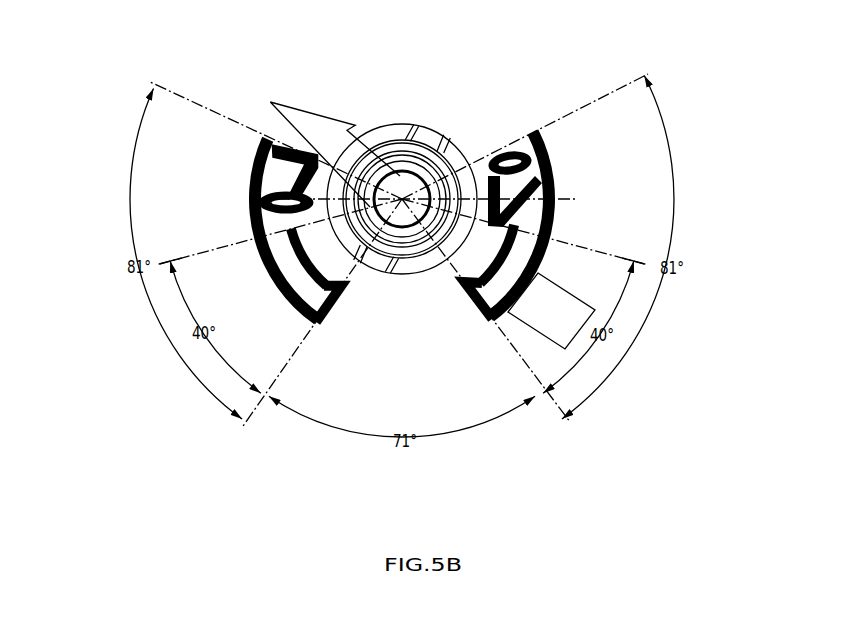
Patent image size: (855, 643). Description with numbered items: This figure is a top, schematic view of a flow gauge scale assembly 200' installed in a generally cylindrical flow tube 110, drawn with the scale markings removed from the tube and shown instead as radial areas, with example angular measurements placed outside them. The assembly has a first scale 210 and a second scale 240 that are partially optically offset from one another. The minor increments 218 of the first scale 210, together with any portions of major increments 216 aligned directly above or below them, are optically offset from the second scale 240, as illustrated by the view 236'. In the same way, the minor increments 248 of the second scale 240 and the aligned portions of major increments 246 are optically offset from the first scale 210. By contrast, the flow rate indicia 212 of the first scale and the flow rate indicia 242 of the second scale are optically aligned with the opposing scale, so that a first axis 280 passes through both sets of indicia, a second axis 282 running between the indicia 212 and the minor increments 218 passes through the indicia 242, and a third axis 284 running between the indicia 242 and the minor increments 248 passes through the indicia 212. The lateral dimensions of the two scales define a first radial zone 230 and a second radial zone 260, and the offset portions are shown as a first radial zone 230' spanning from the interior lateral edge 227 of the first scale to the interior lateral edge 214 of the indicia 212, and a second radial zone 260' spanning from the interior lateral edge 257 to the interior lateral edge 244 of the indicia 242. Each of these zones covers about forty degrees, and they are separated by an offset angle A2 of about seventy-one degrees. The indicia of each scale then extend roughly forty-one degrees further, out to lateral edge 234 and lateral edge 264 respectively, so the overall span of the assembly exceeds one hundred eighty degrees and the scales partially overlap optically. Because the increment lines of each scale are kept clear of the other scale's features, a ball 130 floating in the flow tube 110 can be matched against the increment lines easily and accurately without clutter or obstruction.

The generally cylindrical flow tube 110 is at (399, 116).
The ball 130 is at (436, 133).
The flow gauge scale assembly 200' is at (337, 235).
The first scale 210 is at (575, 203).
The flow rate indicia 212 is at (492, 156).
The interior lateral edge 214 is at (523, 231).
The major increments 216 is at (558, 178).
The minor increments 218 is at (478, 263).
The interior lateral edge 227 is at (486, 311).
The first radial zone 230 is at (642, 248).
The first radial zone 230' is at (598, 351).
The lateral edge 234 is at (525, 136).
The view 236' is at (615, 311).
The second scale 240 is at (240, 185).
The flow rate indicia 242 is at (253, 167).
The interior lateral edge 244 is at (281, 231).
The major increments 246 is at (251, 222).
The minor increments 248 is at (340, 276).
The interior lateral edge 257 is at (321, 313).
The second radial zone 260 is at (162, 253).
The second radial zone 260' is at (195, 339).
The lateral edge 264 is at (275, 140).
The first axis 280 is at (248, 199).
The second axis 282 is at (253, 160).
The third axis 284 is at (546, 146).
The offset angle A2 is at (490, 428).